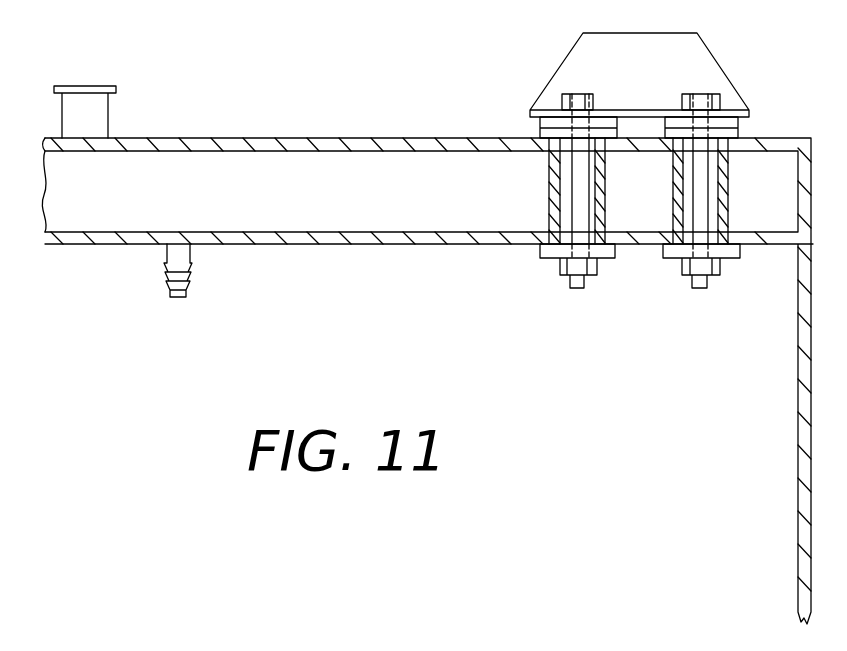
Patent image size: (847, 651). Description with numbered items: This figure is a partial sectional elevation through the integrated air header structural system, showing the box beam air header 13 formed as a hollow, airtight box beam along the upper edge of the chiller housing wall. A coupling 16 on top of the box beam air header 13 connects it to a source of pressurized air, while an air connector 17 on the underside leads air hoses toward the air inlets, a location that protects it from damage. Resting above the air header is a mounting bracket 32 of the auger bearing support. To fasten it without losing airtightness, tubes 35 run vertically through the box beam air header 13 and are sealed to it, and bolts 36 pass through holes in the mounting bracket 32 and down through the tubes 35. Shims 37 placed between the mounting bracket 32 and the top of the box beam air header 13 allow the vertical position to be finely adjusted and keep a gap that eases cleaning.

The box beam air header 13 is at (320, 138).
The coupling 16 is at (80, 86).
The air connector 17 is at (190, 253).
The mounting bracket 32 is at (722, 72).
The tube 35 is at (549, 172).
The bolt 36 is at (570, 209).
The shim 37 is at (540, 120).